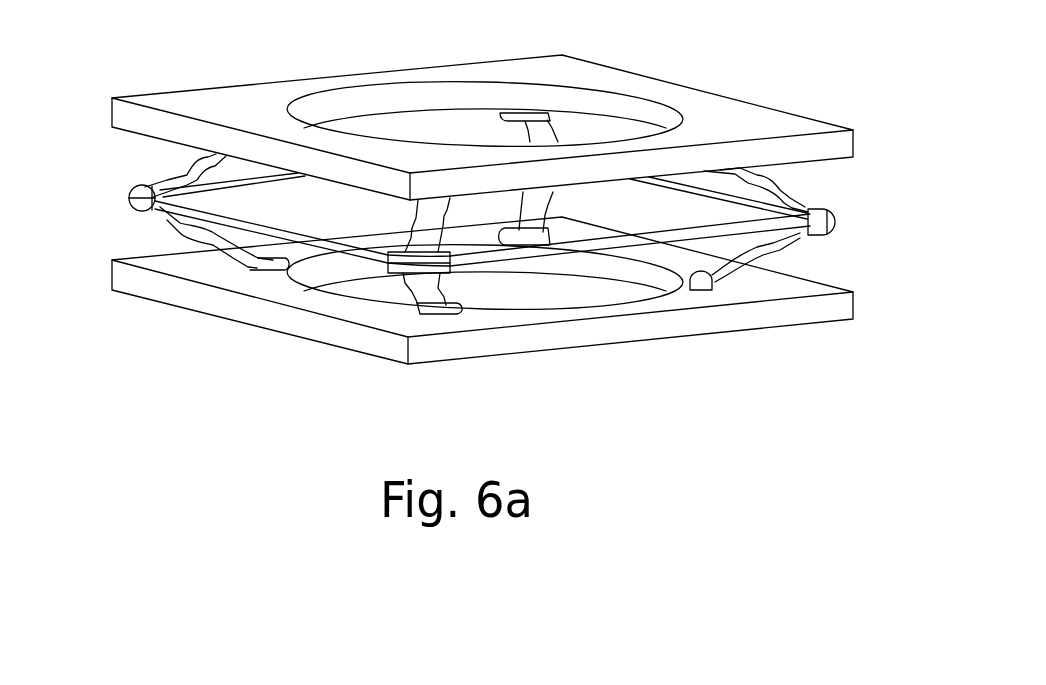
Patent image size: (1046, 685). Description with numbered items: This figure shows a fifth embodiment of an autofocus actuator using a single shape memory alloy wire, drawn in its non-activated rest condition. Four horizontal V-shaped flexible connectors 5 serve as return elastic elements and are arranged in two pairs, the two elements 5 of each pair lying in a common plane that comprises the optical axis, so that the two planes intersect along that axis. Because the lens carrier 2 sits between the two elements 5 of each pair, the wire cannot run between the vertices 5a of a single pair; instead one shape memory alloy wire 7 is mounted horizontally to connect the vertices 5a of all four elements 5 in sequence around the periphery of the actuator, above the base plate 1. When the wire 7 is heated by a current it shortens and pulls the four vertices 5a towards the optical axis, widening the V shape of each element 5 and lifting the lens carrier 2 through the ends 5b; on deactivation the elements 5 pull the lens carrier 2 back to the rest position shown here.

The lower plate 1 is at (614, 325).
The lens carrier 2 is at (717, 113).
The V-shaped flexible connector 5 is at (533, 125).
The vertex 5a is at (130, 194).
The end 5b is at (524, 113).
The shape memory alloy wire 7 is at (719, 234).